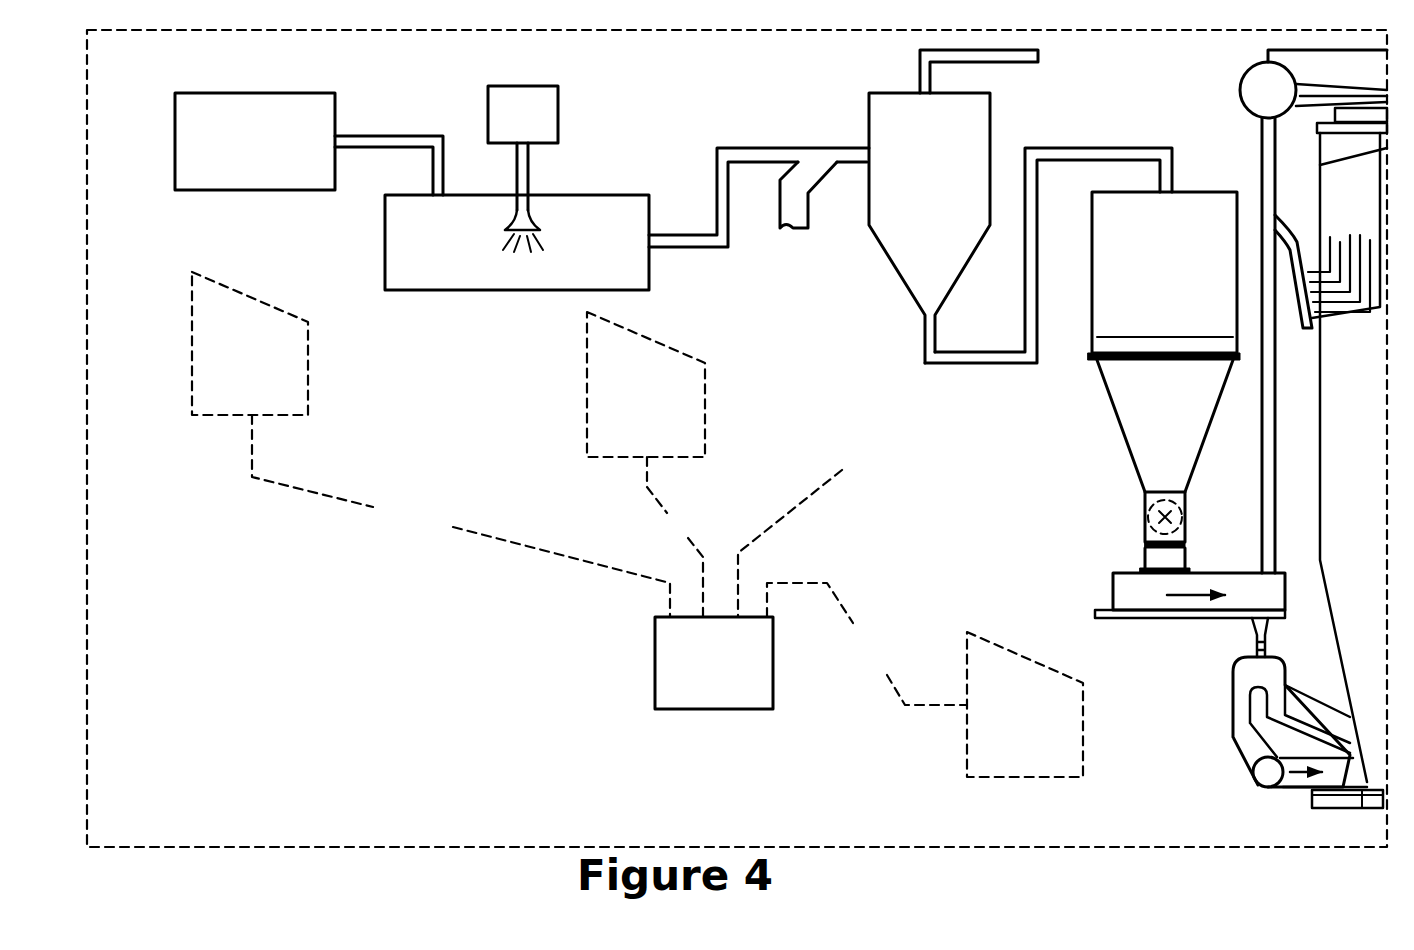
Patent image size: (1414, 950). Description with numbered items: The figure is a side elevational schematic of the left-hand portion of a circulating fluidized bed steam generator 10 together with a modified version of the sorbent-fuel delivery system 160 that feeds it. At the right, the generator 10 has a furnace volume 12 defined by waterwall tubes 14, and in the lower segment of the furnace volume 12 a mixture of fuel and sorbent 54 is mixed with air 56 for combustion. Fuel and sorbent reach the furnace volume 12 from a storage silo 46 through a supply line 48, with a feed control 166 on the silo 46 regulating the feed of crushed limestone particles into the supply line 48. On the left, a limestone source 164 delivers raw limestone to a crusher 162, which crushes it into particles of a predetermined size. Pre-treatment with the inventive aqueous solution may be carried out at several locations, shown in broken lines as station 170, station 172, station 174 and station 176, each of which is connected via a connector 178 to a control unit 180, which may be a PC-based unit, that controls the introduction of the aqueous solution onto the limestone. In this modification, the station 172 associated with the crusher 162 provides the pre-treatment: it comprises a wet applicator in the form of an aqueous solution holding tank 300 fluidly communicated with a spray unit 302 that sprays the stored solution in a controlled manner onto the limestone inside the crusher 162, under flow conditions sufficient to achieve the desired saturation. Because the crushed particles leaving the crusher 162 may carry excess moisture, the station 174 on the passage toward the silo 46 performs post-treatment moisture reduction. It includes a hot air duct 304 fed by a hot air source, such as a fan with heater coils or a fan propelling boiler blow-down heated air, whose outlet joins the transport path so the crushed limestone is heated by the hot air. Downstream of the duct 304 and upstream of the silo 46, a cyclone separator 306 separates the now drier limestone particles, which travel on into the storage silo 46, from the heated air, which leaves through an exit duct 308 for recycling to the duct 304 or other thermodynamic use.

The circulating fluidized bed steam generator 10 is at (1196, 753).
The furnace volume 12 is at (1358, 449).
The waterwall tubes 14 is at (1320, 481).
The storage silo 46 is at (1122, 449).
The supply line 48 is at (1123, 585).
The mixture of fuel and sorbent 54 is at (1210, 608).
The air 56 is at (1307, 778).
The sorbent-fuel delivery system 160 is at (693, 154).
The crusher 162 is at (382, 245).
The limestone source 164 is at (222, 105).
The feed control 166 is at (1140, 511).
The station 170 is at (192, 343).
The station 172 is at (587, 385).
The station 174 is at (868, 336).
The station 176 is at (967, 755).
The connector 178 is at (796, 508).
The control unit 180 is at (655, 675).
The aqueous solution holding tank 300 is at (492, 105).
The spray unit 302 is at (532, 204).
The hot air duct 304 is at (786, 235).
The cyclone separator 306 is at (897, 247).
The exit duct 308 is at (1032, 56).